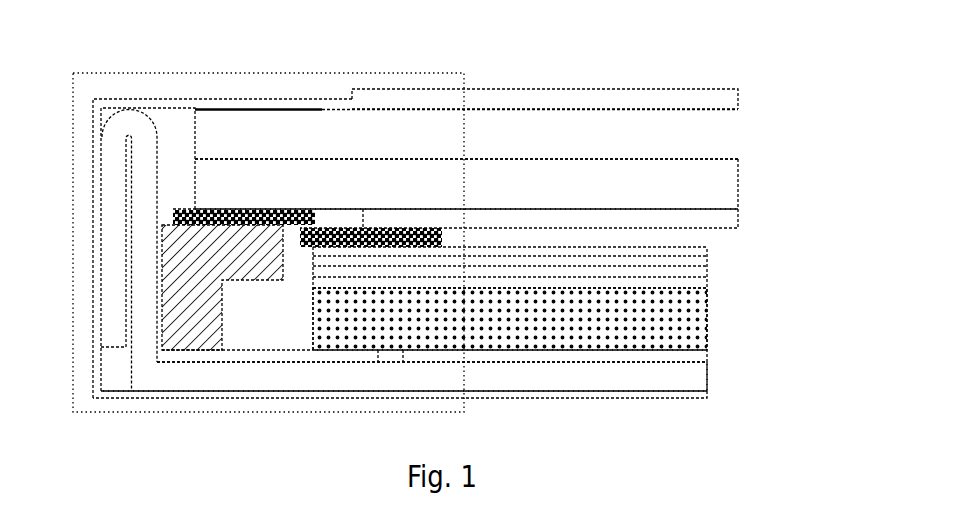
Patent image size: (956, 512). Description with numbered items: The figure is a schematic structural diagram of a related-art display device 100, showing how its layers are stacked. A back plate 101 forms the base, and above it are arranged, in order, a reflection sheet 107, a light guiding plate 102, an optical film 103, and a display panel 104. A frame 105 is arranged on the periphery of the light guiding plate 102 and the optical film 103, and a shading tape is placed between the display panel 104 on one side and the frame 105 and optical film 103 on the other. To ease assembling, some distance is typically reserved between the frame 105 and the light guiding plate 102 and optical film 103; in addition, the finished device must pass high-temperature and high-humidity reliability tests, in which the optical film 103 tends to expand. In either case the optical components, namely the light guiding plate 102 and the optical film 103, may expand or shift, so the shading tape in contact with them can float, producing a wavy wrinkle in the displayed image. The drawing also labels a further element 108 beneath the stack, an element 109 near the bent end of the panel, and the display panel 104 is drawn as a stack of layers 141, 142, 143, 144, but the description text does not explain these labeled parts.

The display device 100 is at (325, 73).
The back plate 101 is at (703, 377).
The light guiding plate 102 is at (708, 323).
The optical film 103 is at (704, 288).
The display panel 104 is at (529, 157).
The frame 105 is at (172, 330).
The reflection sheet 107 is at (703, 357).
The back plate 108 is at (708, 395).
The driver chip 109 is at (172, 218).
The first layer of cover window 141 is at (491, 219).
The second layer of cover window 142 is at (728, 197).
The third layer of cover window 143 is at (723, 141).
The fourth layer of cover window 144 is at (718, 102).